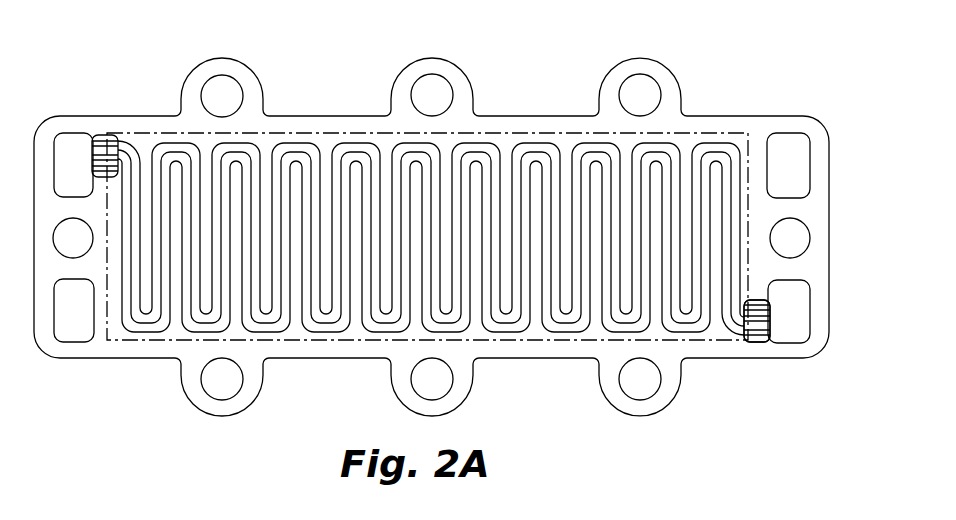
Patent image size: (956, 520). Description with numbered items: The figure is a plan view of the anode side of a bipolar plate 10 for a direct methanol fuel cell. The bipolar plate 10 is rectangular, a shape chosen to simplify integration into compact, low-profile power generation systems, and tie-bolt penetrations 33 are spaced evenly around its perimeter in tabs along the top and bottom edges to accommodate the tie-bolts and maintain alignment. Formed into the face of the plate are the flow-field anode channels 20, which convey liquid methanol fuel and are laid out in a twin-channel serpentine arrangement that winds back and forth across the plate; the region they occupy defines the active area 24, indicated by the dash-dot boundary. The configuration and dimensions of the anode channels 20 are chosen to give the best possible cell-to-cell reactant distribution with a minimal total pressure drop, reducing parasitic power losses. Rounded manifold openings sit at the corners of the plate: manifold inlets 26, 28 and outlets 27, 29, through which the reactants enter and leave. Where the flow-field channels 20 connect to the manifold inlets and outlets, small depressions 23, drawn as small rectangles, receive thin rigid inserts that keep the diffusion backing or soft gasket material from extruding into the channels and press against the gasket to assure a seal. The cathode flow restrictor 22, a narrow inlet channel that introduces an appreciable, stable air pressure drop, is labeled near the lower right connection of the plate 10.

The bipolar plate 10 is at (35, 348).
The flow-field anode channels 20 is at (707, 147).
The cathode flow restrictor 22 is at (767, 329).
The small depressions 23 is at (103, 137).
The active area 24 is at (301, 136).
The manifold inlet 26 is at (803, 179).
The manifold outlet 27 is at (90, 325).
The manifold inlet 28 is at (805, 325).
The manifold outlet 29 is at (89, 178).
The tie-bolt penetrations 33 is at (220, 85).